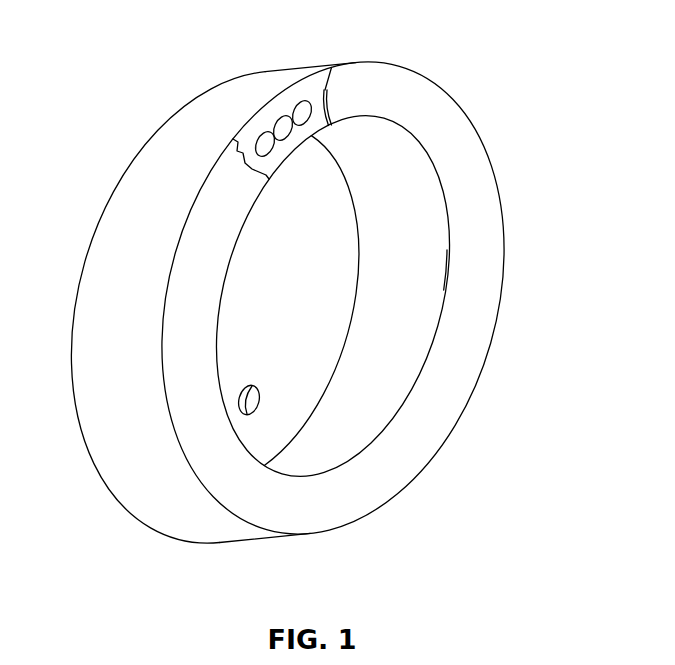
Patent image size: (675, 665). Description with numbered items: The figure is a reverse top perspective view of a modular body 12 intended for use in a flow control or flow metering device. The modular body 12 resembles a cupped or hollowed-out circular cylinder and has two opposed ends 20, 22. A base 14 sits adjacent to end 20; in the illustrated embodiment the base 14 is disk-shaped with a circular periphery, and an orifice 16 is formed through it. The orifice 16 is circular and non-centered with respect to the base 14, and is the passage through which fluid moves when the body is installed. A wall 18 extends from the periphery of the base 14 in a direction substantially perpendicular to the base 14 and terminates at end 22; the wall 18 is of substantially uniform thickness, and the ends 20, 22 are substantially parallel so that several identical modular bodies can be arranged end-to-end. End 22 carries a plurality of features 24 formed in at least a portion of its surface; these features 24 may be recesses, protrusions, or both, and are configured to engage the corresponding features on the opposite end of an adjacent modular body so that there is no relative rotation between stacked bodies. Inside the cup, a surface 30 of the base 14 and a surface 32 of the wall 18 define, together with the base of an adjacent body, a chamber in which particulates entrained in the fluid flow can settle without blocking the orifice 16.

The modular body 12 is at (315, 300).
The base 14 is at (335, 218).
The orifice 16 is at (250, 416).
The wall 18 is at (497, 328).
The end 20 is at (130, 163).
The end 22 is at (482, 224).
The features 24 is at (334, 68).
The surface 30 is at (383, 267).
The surface 32 is at (423, 195).